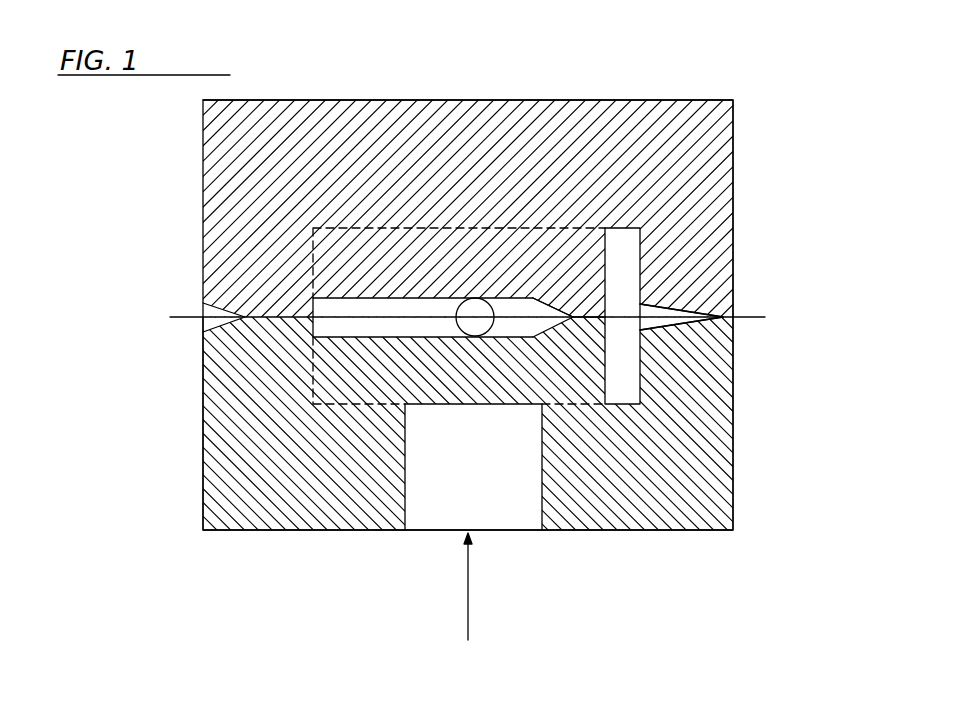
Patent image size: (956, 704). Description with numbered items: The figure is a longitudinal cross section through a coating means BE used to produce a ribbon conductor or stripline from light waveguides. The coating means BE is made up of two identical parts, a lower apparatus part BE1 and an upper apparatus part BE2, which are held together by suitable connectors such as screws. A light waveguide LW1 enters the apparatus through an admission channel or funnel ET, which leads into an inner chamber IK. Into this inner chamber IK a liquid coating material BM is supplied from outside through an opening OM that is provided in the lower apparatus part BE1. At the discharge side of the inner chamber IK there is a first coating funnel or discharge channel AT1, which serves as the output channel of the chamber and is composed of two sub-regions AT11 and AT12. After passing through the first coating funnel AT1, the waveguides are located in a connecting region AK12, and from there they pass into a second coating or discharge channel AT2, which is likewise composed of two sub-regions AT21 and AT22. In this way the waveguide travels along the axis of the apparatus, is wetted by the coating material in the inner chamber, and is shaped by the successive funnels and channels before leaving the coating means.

The coating means BE is at (292, 534).
The lower apparatus part BE1 is at (656, 533).
The upper apparatus part BE2 is at (720, 140).
The light waveguide LW1 is at (205, 332).
The admission channel or funnel ET is at (243, 317).
The inner chamber IK is at (400, 300).
The first coating funnel or discharge channel AT1 is at (549, 294).
The first sub-region of first coating funnel AT11 is at (549, 313).
The second sub-region of first coating funnel AT12 is at (589, 315).
The connecting region AK12 is at (625, 248).
The second coating or discharge channel AT2 is at (667, 297).
The first sub-region of second coating channel AT21 is at (667, 331).
The second sub-region of second coating channel AT22 is at (724, 316).
The opening OM is at (503, 522).
The liquid coating material BM is at (468, 607).